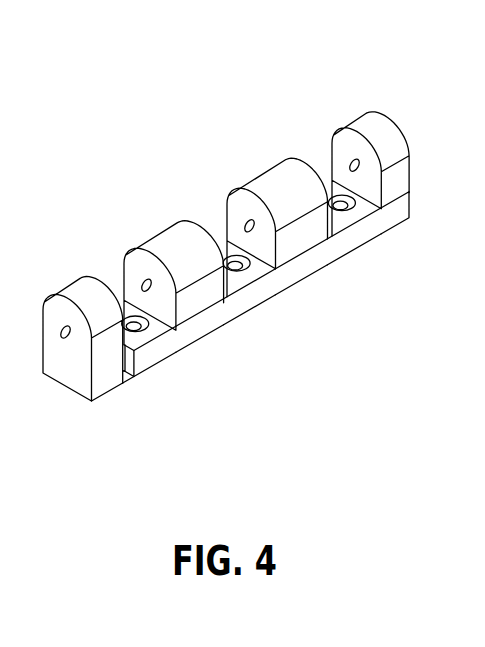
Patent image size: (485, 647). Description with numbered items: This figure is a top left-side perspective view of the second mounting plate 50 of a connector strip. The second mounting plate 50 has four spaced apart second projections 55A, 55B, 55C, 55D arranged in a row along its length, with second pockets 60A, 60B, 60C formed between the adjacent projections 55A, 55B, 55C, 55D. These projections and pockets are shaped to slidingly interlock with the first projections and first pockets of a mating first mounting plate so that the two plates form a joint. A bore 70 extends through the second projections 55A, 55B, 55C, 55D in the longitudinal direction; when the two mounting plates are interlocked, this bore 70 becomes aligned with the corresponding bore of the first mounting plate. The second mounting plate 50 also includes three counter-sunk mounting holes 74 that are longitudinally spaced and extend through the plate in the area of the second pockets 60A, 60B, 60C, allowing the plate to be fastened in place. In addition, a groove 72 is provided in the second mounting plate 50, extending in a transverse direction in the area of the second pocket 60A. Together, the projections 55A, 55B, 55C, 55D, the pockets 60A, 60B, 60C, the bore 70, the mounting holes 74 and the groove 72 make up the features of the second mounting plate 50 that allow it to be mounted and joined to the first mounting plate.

The second mounting plate 50 is at (305, 255).
The second projection 55A is at (78, 300).
The second projection 55B is at (170, 246).
The second projection 55C is at (273, 187).
The second projection 55D is at (370, 128).
The second pocket 60A is at (185, 340).
The second pocket 60B is at (255, 280).
The second pocket 60C is at (365, 207).
The bore 70 is at (63, 337).
The groove 72 is at (125, 372).
The mounting holes 74 is at (124, 312).